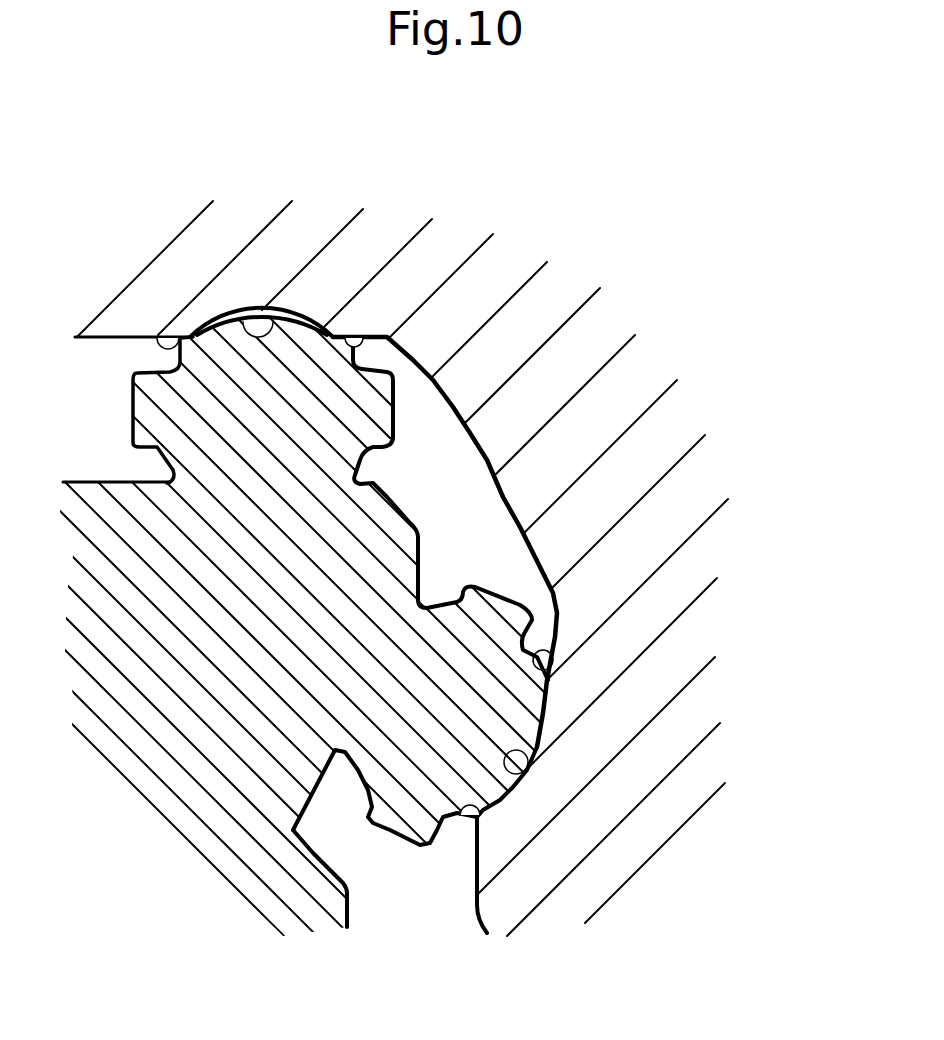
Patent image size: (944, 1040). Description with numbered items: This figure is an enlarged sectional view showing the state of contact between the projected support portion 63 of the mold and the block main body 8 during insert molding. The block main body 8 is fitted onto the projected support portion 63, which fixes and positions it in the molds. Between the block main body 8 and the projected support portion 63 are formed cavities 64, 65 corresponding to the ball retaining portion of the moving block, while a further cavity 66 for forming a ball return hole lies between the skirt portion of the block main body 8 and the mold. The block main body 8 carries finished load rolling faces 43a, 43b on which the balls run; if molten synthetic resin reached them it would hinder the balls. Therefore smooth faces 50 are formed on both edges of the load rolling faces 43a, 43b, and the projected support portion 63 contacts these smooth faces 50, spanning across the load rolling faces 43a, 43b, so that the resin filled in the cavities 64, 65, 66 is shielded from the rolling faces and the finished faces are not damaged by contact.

The block main body 8 is at (638, 392).
The load rolling face 43a is at (503, 750).
The load rolling face 43b is at (247, 303).
The smooth faces 50 is at (158, 335).
The projected support portion 63 is at (195, 790).
The cavity 64 is at (85, 365).
The cavity 65 is at (463, 477).
The cavity 66 is at (342, 835).